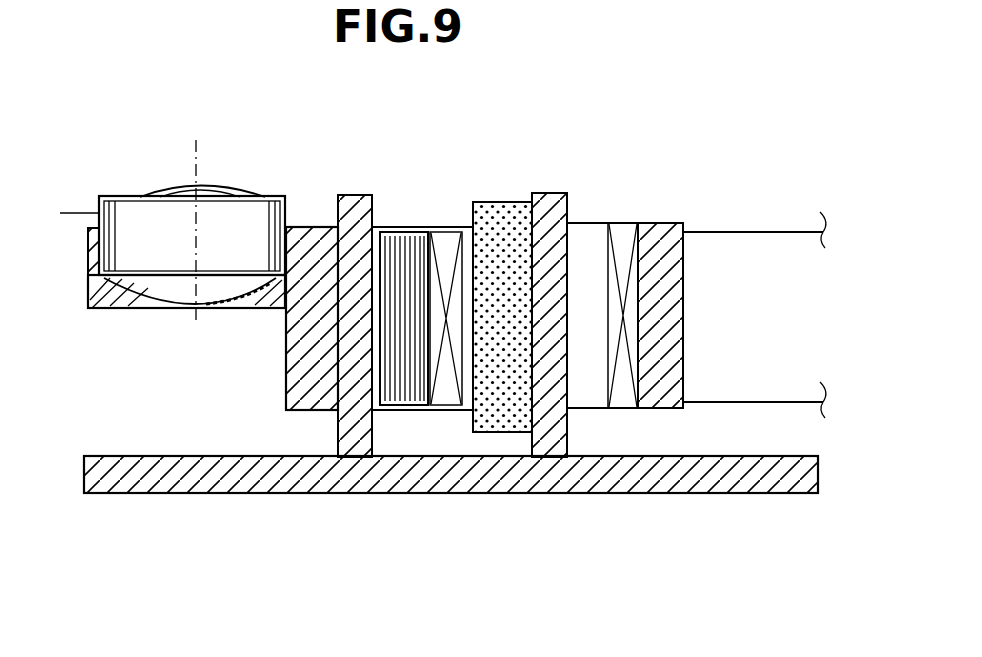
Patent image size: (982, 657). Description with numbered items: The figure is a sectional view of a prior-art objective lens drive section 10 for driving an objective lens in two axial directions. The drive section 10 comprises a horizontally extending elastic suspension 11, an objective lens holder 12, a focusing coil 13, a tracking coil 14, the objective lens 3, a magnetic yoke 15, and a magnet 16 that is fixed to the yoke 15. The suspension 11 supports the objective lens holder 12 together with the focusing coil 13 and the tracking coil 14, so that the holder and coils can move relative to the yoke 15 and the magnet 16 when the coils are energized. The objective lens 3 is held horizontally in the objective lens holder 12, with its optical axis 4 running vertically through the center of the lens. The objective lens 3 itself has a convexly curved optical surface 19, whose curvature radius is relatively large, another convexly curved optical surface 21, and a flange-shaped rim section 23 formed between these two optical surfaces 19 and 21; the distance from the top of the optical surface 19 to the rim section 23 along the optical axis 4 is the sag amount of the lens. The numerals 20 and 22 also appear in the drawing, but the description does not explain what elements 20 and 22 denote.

The objective lens 3 is at (107, 193).
The optical axis 4 is at (220, 190).
The objective lens drive section 10 is at (650, 196).
The elastic suspension 11 is at (758, 232).
The objective lens holder 12 is at (315, 227).
The focusing coil 13 is at (450, 227).
The tracking coil 14 is at (405, 227).
The magnetic yoke 15 is at (705, 472).
The magnet 16 is at (501, 204).
The convexly curved optical surface 19 is at (243, 305).
The lens holder 20 is at (155, 298).
The convexly curved optical surface 21 is at (200, 228).
The lens upper surface 22 is at (170, 190).
The flange-shaped rim section 23 is at (63, 214).